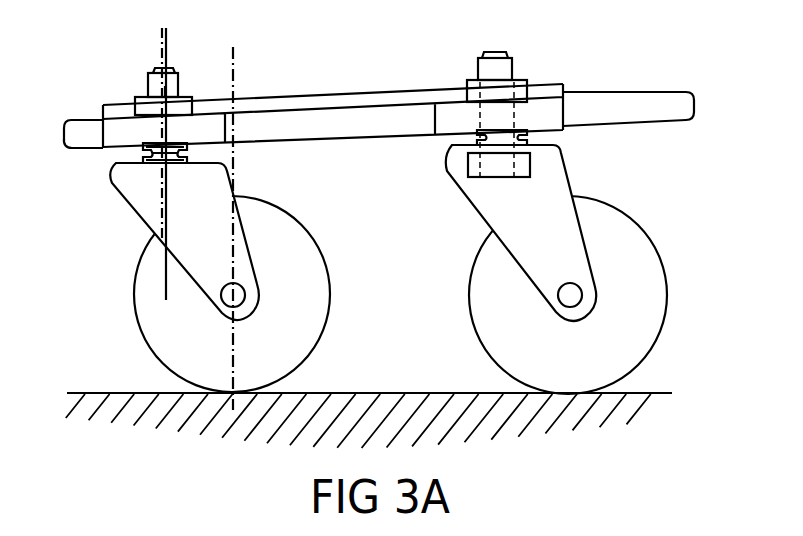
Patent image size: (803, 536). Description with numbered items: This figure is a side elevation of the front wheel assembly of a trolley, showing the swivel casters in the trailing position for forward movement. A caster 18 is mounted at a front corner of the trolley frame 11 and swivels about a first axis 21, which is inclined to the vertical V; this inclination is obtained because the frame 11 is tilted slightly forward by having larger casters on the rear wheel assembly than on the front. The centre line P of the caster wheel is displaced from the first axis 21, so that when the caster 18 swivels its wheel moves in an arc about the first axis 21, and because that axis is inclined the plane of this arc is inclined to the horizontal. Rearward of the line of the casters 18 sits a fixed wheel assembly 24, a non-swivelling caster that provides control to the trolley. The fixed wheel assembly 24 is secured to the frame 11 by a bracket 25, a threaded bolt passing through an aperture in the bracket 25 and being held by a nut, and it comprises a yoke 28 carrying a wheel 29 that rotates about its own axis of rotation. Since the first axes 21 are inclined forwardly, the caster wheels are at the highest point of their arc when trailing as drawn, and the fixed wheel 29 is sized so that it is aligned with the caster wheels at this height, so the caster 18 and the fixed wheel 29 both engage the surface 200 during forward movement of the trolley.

The trolley frame 11 is at (377, 118).
The bracket 25 is at (305, 95).
The first axis 21 is at (158, 44).
The vertical V is at (172, 52).
The centre line P is at (238, 60).
The caster 18 is at (148, 304).
The fixed wheel assembly 24 is at (580, 183).
The yoke 28 is at (545, 170).
The wheel 29 is at (488, 282).
The surface 200 is at (400, 427).